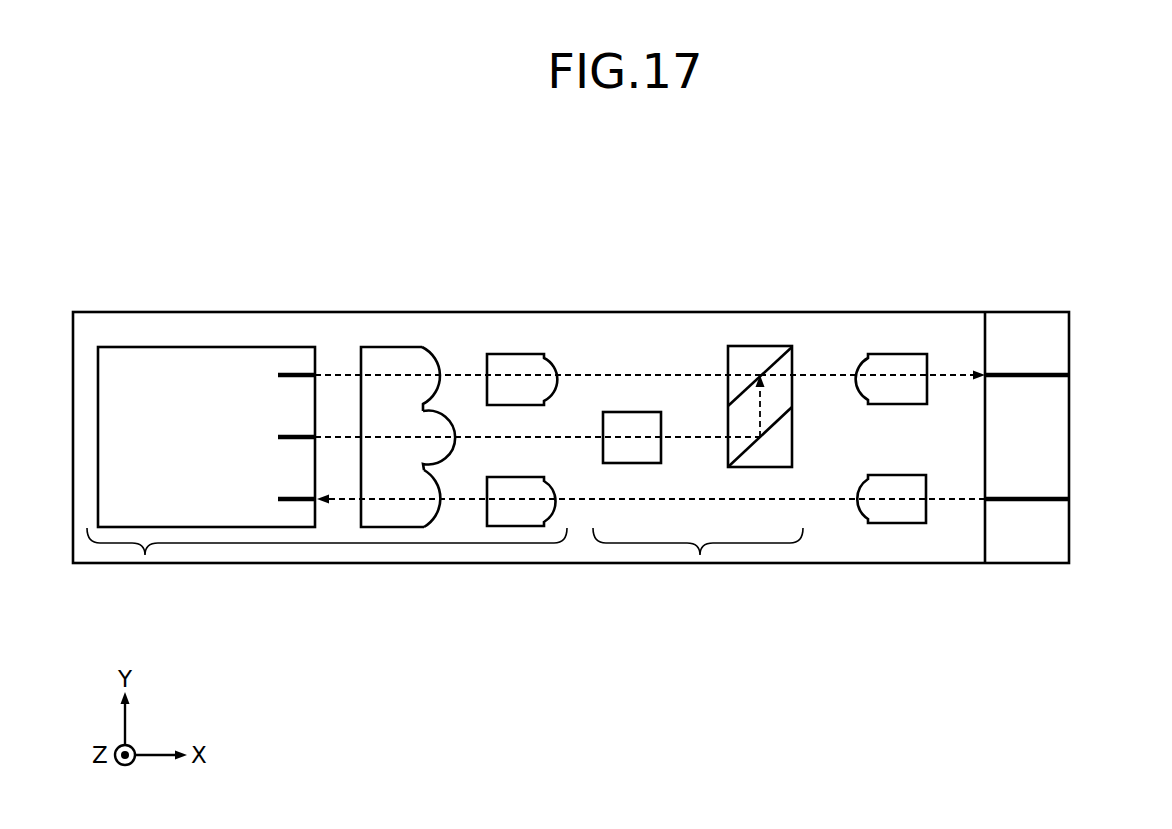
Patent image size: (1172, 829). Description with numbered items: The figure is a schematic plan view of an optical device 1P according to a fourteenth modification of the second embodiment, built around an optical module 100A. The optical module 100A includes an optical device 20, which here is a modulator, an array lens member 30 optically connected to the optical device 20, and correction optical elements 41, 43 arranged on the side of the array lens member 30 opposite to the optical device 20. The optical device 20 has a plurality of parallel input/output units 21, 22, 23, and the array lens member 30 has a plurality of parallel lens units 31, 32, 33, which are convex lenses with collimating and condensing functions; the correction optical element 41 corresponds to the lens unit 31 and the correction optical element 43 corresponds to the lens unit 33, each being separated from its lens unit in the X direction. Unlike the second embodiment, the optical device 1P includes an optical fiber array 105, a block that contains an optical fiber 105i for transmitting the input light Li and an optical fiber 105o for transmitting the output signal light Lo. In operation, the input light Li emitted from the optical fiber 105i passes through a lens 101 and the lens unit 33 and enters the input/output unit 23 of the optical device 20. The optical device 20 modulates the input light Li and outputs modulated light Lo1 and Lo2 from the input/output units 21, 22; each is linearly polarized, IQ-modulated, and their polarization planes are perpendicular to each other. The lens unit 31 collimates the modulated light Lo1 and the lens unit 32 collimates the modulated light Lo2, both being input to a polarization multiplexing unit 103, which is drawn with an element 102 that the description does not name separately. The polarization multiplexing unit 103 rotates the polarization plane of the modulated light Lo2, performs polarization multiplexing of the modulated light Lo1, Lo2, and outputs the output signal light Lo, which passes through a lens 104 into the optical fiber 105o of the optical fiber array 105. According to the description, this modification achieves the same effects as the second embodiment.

The optical device 1P is at (790, 243).
The optical device 20 is at (149, 340).
The input/output unit 21 is at (292, 372).
The input/output unit 22 is at (289, 440).
The input/output unit 23 is at (293, 503).
The array lens member 30 is at (407, 429).
The lens unit 31 is at (425, 360).
The lens unit 32 is at (442, 444).
The lens unit 33 is at (426, 506).
The correction optical element 41 is at (518, 367).
The correction optical element 43 is at (530, 512).
The optical module 100A is at (327, 567).
The lens 101 is at (907, 507).
The beam splitter prism 102 is at (787, 430).
The polarization multiplexing unit 103 is at (698, 509).
The lens 104 is at (900, 367).
The optical fiber array 105 is at (1077, 429).
The optical fiber 105o is at (1030, 372).
The optical fiber 105i is at (1020, 503).
The modulated light Lo1 is at (605, 372).
The modulated light Lo2 is at (578, 441).
The output signal light Lo is at (955, 372).
The input light Li is at (956, 503).